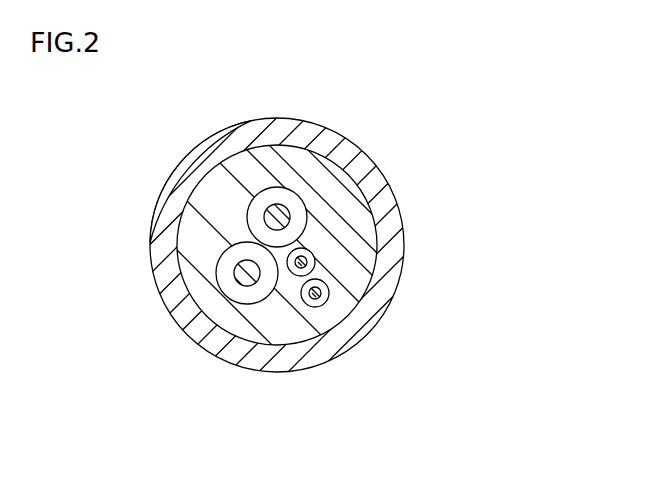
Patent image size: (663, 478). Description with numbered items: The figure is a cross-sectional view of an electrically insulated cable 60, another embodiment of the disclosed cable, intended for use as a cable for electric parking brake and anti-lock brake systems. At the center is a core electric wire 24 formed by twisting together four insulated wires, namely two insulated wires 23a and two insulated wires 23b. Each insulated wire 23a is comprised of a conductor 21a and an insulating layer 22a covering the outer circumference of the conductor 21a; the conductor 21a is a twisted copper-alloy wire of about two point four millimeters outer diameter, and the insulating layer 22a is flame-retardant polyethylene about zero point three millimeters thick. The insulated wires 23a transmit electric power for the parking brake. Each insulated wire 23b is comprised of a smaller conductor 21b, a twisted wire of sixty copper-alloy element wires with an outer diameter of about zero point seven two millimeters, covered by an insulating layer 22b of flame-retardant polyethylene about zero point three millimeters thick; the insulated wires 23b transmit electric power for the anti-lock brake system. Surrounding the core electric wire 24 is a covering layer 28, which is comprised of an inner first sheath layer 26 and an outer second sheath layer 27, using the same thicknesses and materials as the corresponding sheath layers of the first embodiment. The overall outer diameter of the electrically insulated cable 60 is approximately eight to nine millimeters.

The electrically insulated cable 60 is at (399, 120).
The conductor 21a is at (287, 215).
The insulating layer 22a is at (297, 228).
The insulated wire 23a is at (475, 125).
The conductor 21b is at (305, 262).
The insulating layer 22b is at (313, 270).
The insulated wire 23b is at (475, 247).
The core electric wire 24 is at (525, 133).
The first sheath layer 26 is at (224, 317).
The second sheath layer 27 is at (251, 357).
The covering layer 28 is at (265, 427).